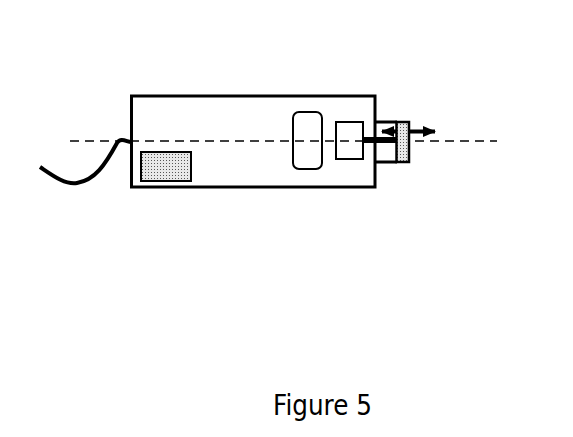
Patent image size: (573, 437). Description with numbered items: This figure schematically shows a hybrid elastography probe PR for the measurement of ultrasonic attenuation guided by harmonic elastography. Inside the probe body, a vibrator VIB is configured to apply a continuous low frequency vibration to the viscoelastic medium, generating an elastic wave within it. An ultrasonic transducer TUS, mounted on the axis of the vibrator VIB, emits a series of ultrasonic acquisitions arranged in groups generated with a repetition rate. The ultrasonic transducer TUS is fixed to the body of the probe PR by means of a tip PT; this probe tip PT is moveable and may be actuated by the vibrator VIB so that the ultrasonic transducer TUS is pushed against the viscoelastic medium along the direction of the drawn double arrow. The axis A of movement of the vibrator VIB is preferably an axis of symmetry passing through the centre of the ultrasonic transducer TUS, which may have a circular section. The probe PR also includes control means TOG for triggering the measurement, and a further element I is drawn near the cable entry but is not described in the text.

The probe PR is at (190, 84).
The interface / connector unit I is at (139, 170).
The control means TOG is at (315, 111).
The vibrator VIB is at (357, 112).
The tip PT is at (392, 119).
The ultrasonic transducer TUS is at (416, 150).
The axis A is at (284, 128).